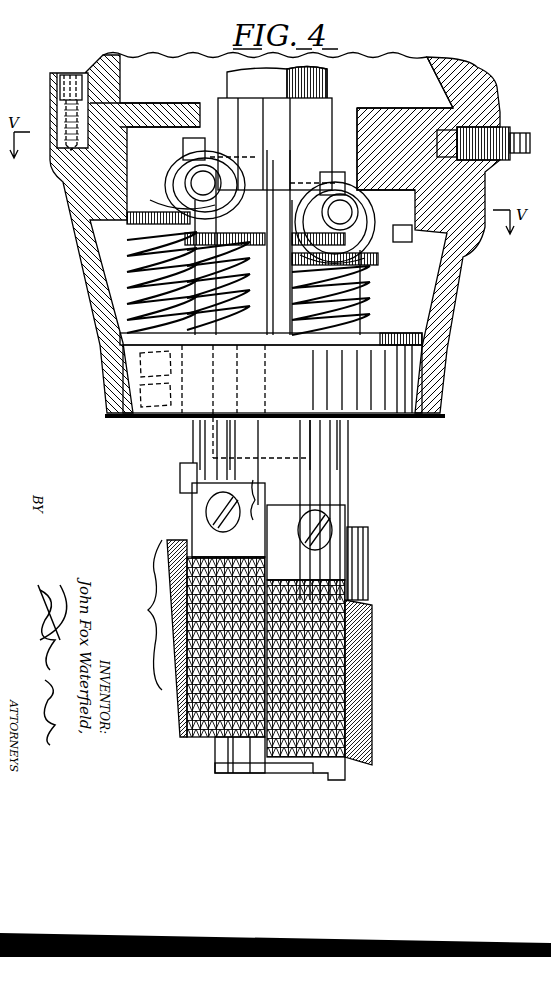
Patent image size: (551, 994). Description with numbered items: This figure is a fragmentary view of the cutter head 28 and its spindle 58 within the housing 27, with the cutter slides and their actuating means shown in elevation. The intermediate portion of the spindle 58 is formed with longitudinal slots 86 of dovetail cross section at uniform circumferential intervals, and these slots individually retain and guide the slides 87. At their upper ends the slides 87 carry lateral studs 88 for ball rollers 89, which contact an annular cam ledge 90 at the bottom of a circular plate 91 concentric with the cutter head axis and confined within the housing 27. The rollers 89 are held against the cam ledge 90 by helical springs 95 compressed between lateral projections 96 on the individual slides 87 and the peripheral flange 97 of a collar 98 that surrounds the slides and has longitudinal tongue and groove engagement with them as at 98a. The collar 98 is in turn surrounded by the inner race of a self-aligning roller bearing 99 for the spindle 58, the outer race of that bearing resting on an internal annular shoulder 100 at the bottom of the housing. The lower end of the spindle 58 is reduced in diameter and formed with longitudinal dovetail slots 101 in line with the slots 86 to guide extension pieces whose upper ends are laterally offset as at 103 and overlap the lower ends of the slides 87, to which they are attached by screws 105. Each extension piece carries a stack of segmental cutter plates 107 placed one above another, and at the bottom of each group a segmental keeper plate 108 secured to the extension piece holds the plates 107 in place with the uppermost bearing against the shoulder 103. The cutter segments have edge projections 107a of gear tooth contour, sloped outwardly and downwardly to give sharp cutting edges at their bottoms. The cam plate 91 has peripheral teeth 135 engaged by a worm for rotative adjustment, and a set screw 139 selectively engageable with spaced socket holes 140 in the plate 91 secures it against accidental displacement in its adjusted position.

The housing 27 is at (470, 80).
The cutter head 28 is at (269, 670).
The spindle 58 is at (323, 82).
The longitudinal slots 86 is at (250, 110).
The slides 87 is at (280, 183).
The lateral studs 88 is at (187, 180).
The ball rollers 89 is at (183, 147).
The annular cam ledge 90 is at (168, 108).
The circular plate 91 is at (400, 108).
The helical springs 95 is at (130, 290).
The lateral projections 96 is at (127, 253).
The peripheral flange 97 is at (447, 343).
The collar 98 is at (358, 406).
The tongue and groove engagement 98a is at (337, 430).
The self-aligning roller bearing 99 is at (400, 383).
The internal annular shoulder 100 is at (420, 420).
The longitudinal dovetail slots 101 is at (240, 767).
The laterally offset upper ends 103 is at (183, 467).
The screws 105 is at (210, 512).
The segmental cutter plates 107 is at (174, 715).
The edge projections 107a is at (225, 570).
The segmental keeper plate 108 is at (180, 730).
The peripheral teeth 135 is at (100, 187).
The set screw 139 is at (500, 133).
The socket holes 140 is at (107, 110).